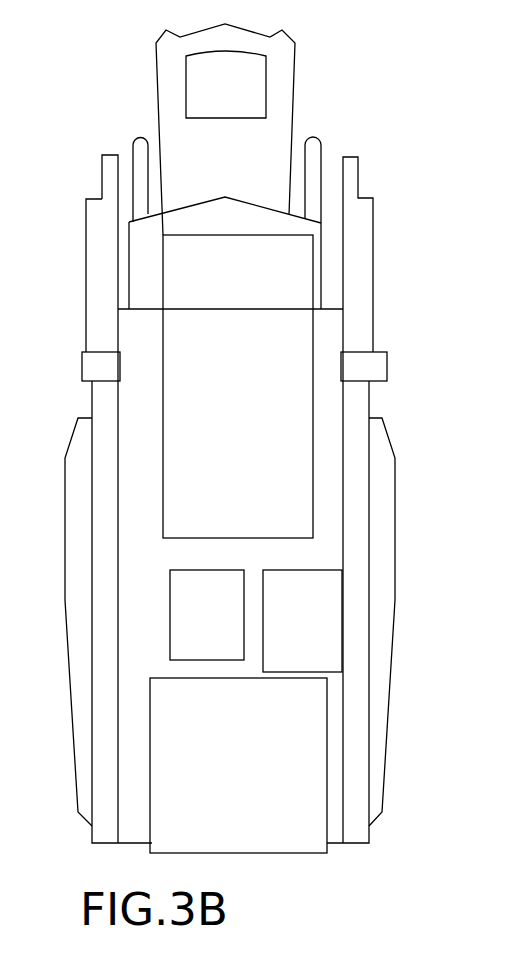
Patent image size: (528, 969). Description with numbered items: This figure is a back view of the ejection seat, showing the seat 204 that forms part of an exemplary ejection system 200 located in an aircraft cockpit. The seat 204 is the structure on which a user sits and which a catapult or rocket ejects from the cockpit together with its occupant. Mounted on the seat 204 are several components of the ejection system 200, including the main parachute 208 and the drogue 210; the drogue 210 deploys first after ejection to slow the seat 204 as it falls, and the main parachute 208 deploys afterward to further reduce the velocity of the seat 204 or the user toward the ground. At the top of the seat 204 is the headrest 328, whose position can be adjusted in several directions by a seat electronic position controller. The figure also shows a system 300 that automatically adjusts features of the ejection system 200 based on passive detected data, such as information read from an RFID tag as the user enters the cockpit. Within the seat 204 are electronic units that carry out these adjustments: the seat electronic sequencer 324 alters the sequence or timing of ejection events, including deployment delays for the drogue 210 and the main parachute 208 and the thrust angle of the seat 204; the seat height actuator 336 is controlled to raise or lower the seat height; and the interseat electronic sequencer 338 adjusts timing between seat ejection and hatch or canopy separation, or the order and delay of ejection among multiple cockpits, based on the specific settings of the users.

The ejection system 200 is at (446, 247).
The seat 204 is at (427, 429).
The main parachute 208 is at (313, 497).
The drogue 210 is at (313, 282).
The system 300 is at (397, 189).
The seat electronic sequencer 324 is at (307, 642).
The headrest 328 is at (185, 143).
The seat height actuator 336 is at (263, 855).
The interseat electronic sequencer 338 is at (183, 620).